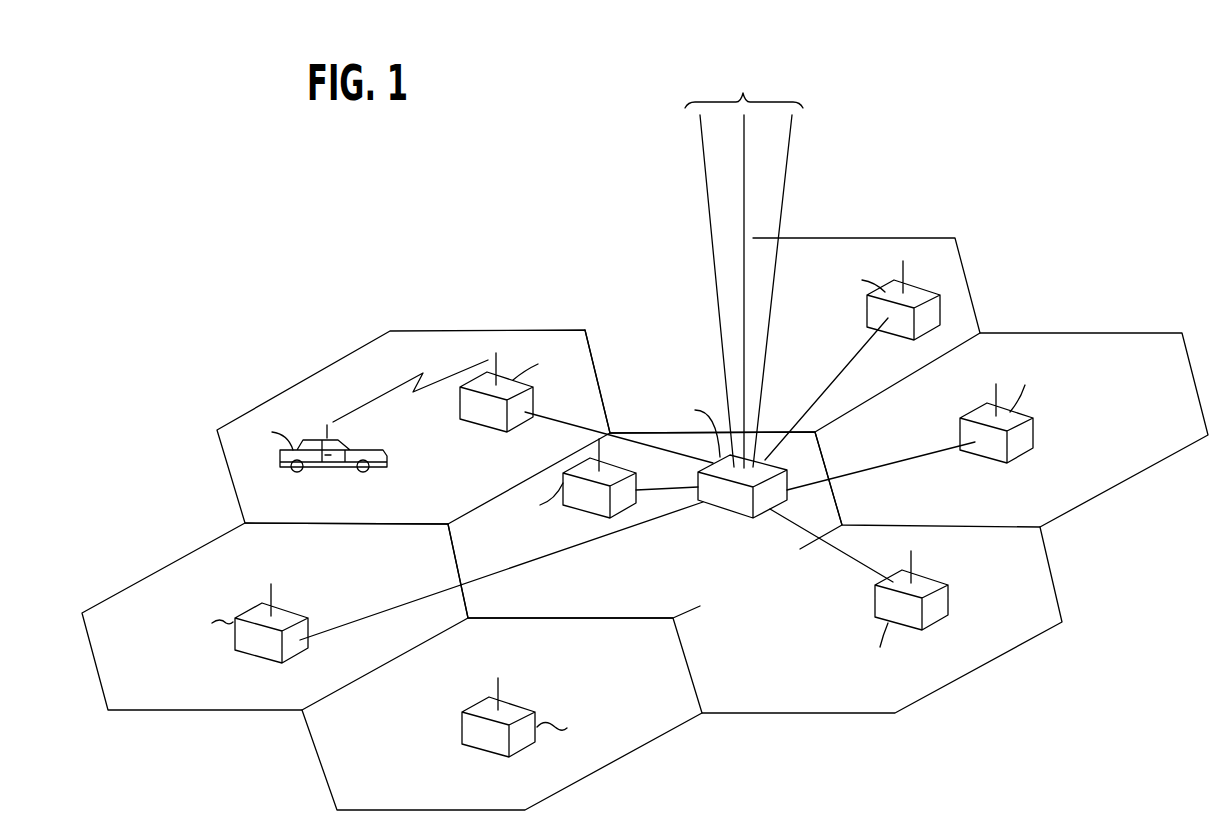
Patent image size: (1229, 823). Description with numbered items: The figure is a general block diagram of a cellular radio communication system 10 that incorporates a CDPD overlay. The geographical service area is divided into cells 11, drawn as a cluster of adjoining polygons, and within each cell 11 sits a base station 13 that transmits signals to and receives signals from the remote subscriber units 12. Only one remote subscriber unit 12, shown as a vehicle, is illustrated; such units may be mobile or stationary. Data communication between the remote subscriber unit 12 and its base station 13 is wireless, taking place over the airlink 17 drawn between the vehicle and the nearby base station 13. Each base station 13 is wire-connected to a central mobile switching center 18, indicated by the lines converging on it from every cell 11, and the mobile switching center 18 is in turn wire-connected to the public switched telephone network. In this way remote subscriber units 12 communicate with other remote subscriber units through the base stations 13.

The cellular radio communication system 10 is at (1088, 118).
The cell 11 is at (412, 343).
The remote subscriber unit 12 is at (310, 430).
The base station 13 is at (503, 383).
The airlink 17 is at (367, 398).
The mobile switching center 18 is at (698, 507).